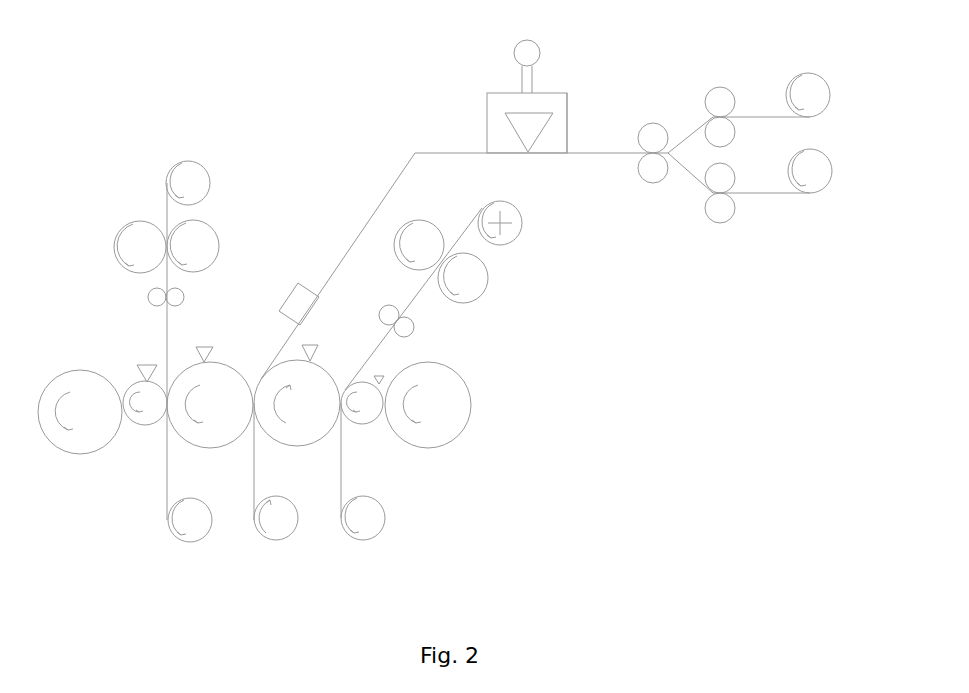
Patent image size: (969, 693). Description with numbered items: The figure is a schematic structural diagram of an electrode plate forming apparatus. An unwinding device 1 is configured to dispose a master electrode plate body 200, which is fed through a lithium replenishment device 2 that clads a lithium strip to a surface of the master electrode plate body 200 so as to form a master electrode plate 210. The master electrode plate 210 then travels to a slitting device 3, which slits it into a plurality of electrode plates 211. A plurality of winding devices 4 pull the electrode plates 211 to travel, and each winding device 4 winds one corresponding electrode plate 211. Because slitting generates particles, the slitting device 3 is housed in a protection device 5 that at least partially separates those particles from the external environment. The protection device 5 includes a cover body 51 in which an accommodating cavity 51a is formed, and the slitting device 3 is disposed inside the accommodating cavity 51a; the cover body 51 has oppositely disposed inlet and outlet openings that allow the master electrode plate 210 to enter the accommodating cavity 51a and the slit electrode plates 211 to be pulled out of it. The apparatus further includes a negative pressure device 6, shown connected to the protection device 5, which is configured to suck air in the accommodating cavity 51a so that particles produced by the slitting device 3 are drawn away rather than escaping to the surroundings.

The unwinding device 1 is at (280, 528).
The lithium replenishment device 2 is at (136, 343).
The slitting device 3 is at (525, 127).
The winding device 4 is at (813, 103).
The protection device 5 is at (515, 92).
The cover body 51 is at (527, 123).
The accommodating cavity 51a is at (560, 107).
The negative pressure device 6 is at (542, 54).
The master electrode plate body 200 is at (253, 480).
The master electrode plate 210 is at (348, 250).
The electrode plate 211 is at (750, 115).